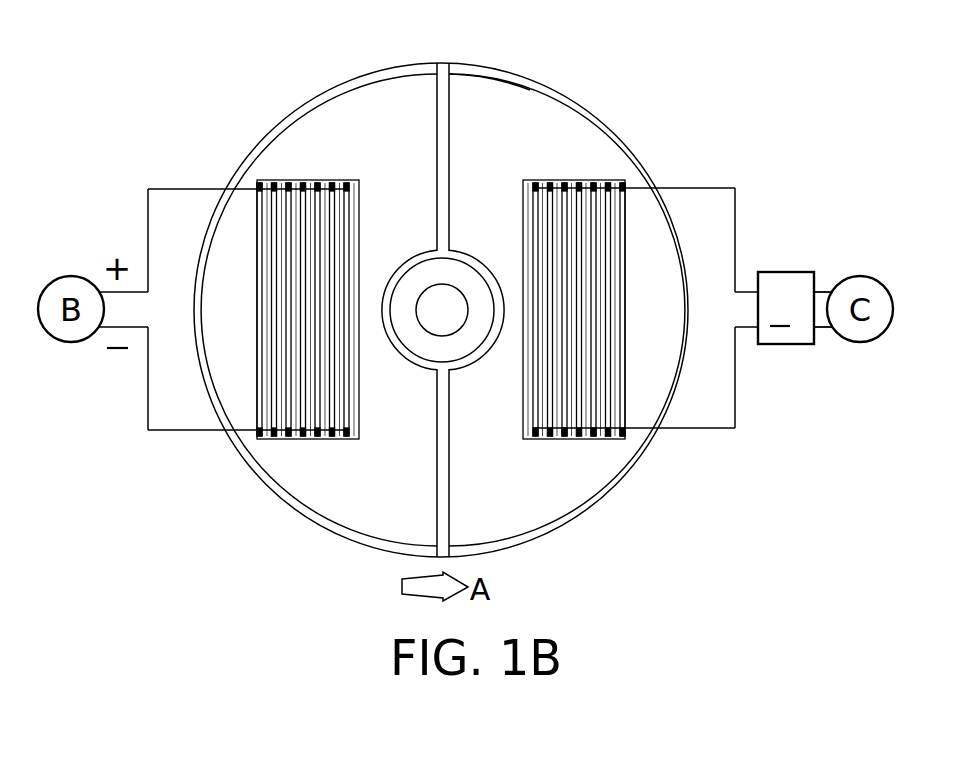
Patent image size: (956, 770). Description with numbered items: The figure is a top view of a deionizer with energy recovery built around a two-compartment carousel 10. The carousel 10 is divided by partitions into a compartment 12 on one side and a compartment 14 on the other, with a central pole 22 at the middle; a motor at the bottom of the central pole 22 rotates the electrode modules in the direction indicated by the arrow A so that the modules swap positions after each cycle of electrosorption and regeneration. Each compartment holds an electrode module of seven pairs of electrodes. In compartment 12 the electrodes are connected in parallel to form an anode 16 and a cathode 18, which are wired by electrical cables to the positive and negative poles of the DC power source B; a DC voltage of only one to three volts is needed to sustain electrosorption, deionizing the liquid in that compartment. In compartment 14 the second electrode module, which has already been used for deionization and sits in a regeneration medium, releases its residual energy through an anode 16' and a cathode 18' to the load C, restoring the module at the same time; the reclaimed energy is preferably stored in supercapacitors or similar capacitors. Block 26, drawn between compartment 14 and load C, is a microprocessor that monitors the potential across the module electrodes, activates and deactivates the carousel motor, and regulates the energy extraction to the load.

The two-compartment carousel 10 is at (590, 503).
The compartment 12 is at (408, 88).
The compartment 14 is at (468, 88).
The anode 16 is at (223, 195).
The cathode 18 is at (223, 425).
The anode 16' is at (666, 415).
The cathode 18' is at (665, 204).
The central pole 22 is at (451, 291).
The microprocessor 26 is at (786, 345).